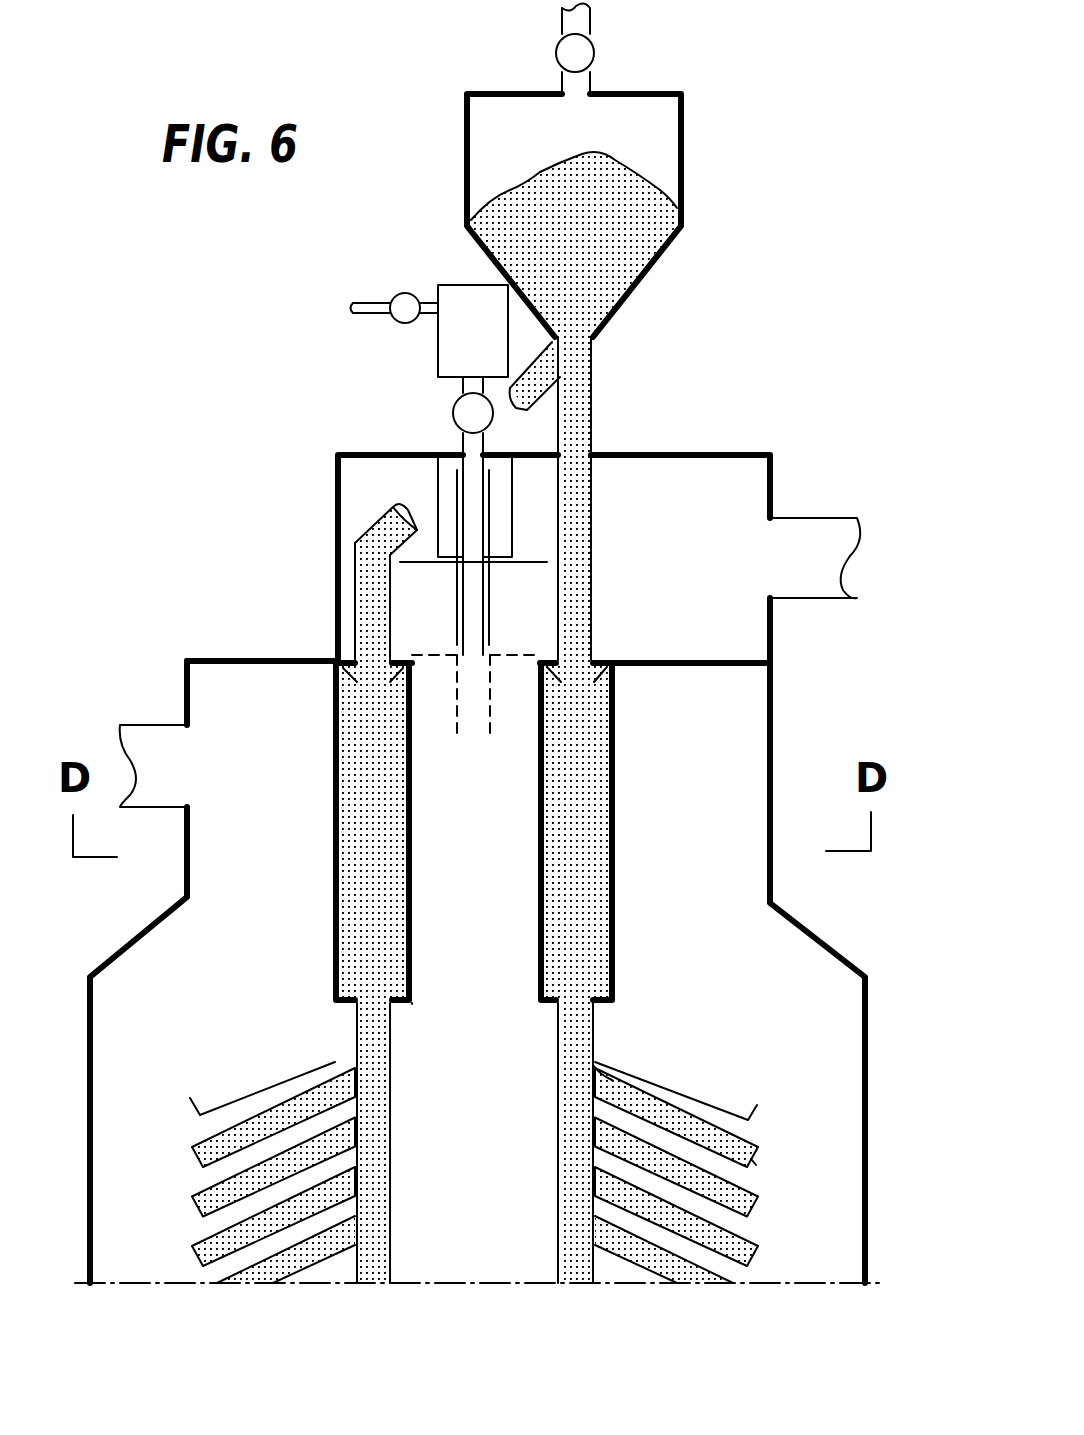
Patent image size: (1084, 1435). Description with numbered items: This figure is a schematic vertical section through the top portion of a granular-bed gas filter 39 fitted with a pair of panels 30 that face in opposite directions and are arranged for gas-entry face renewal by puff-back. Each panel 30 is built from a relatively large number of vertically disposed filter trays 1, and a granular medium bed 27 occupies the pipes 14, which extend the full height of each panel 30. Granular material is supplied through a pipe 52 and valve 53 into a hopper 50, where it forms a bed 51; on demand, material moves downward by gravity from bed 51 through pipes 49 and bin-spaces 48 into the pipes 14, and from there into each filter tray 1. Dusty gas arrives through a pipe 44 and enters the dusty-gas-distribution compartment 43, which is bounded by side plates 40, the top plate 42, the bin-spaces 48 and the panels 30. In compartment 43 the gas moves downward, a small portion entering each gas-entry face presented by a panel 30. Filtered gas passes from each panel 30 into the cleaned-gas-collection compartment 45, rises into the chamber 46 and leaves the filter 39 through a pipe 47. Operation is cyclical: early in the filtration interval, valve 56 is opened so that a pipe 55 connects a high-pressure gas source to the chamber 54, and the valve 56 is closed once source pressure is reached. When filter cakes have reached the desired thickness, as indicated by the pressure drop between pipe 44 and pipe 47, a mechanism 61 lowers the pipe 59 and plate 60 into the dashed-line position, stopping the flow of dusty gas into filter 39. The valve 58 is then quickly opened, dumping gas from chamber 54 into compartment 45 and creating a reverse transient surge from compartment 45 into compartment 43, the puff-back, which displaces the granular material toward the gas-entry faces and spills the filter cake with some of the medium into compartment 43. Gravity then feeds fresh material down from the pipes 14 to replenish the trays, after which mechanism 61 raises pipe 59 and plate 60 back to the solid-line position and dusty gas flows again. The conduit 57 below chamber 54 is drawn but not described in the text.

The filter tray 1 is at (762, 1151).
The pipe 14 is at (392, 1150).
The granular medium bed 27 is at (575, 1090).
The vertical panel 30 is at (175, 1110).
The gas filter 39 is at (781, 346).
The side plate 40 is at (190, 852).
The top plate 42 is at (256, 656).
The dusty-gas-distribution compartment 43 is at (278, 812).
The pipe 44 is at (152, 722).
The cleaned-gas-collection compartment 45 is at (486, 860).
The chamber 46 is at (700, 580).
The pipe 47 is at (822, 516).
The bin-space 48 is at (334, 850).
The pipe 49 is at (594, 402).
The hopper 50 is at (686, 152).
The bed 51 is at (580, 270).
The pipe 52 is at (592, 16).
The valve 53 is at (595, 56).
The chamber 54 is at (482, 347).
The pipe 55 is at (370, 302).
The valve 56 is at (405, 292).
The conduit 57 is at (462, 384).
The valve 58 is at (452, 416).
The pipe 59 is at (492, 614).
The plate 60 is at (536, 560).
The mechanism 61 is at (437, 494).